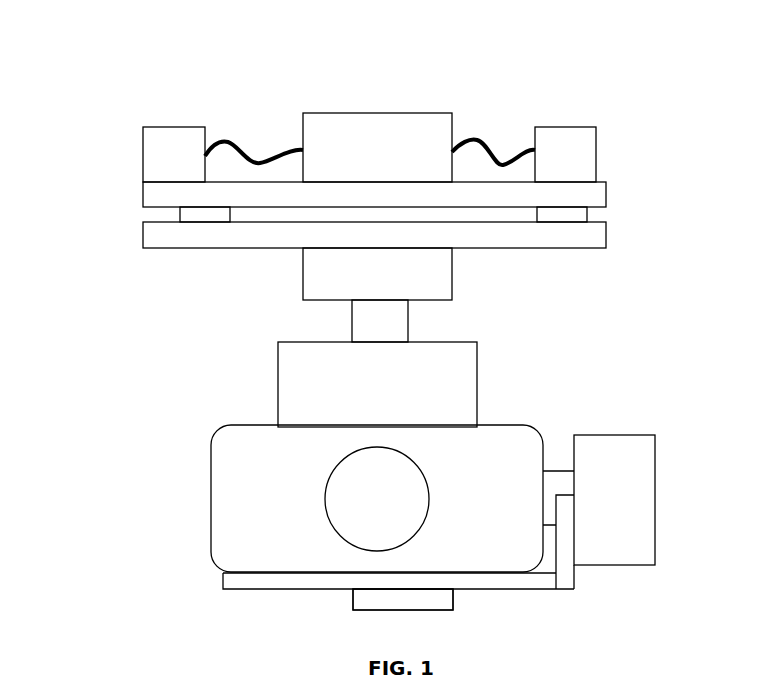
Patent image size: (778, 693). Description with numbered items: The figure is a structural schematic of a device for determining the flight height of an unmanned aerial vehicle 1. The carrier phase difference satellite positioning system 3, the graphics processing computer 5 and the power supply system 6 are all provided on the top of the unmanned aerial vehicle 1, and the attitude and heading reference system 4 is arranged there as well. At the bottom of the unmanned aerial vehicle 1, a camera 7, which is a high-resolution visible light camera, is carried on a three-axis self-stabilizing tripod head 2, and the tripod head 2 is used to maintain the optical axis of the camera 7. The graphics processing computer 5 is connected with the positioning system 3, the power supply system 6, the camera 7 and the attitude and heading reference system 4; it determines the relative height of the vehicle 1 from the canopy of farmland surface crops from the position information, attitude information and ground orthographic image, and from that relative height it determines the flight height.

The unmanned aerial vehicle 1 is at (278, 403).
The three-axis self-stabilizing tripod head 2 is at (636, 424).
The carrier phase difference satellite positioning system 3 is at (142, 153).
The attitude and heading reference system 4 is at (333, 112).
The graphics processing computer 5 is at (455, 598).
The power supply system 6 is at (584, 125).
The camera 7 is at (208, 513).